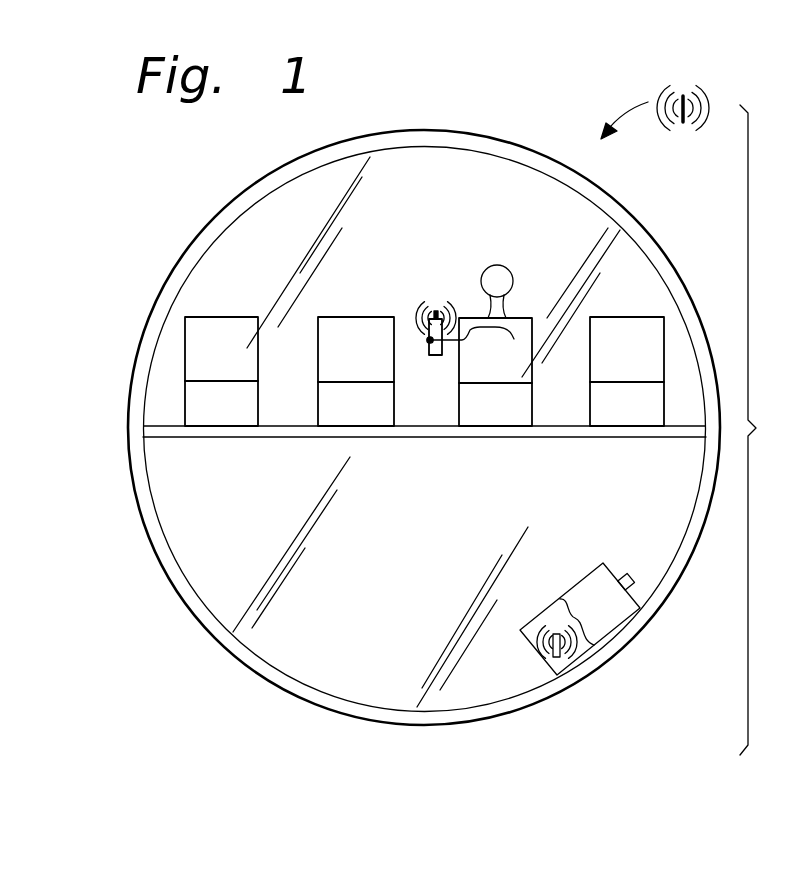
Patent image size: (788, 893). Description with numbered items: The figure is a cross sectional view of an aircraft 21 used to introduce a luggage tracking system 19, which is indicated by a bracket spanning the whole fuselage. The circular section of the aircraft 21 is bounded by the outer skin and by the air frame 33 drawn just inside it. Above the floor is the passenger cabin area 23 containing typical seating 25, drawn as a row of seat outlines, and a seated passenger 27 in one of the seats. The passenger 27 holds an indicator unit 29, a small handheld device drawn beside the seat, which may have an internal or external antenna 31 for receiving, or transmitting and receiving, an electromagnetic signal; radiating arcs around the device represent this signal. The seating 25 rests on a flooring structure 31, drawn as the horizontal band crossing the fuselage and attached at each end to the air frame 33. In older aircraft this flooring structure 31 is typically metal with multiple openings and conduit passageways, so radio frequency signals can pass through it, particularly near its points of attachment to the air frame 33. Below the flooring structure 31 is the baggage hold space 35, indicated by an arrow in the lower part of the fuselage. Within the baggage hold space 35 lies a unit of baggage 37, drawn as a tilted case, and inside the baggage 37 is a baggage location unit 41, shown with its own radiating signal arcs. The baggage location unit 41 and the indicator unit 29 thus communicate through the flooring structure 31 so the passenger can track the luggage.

The luggage tracking system 19 is at (763, 430).
The aircraft 21 is at (618, 203).
The passenger cabin area 23 is at (460, 163).
The seating 25 is at (250, 317).
The seated passenger 27 is at (508, 275).
The indicator unit 29 is at (430, 342).
The antenna / flooring structure 31 is at (436, 311).
The air frame 33 is at (655, 267).
The baggage hold space 35 is at (345, 672).
The baggage 37 is at (620, 615).
The baggage location unit 41 is at (562, 650).